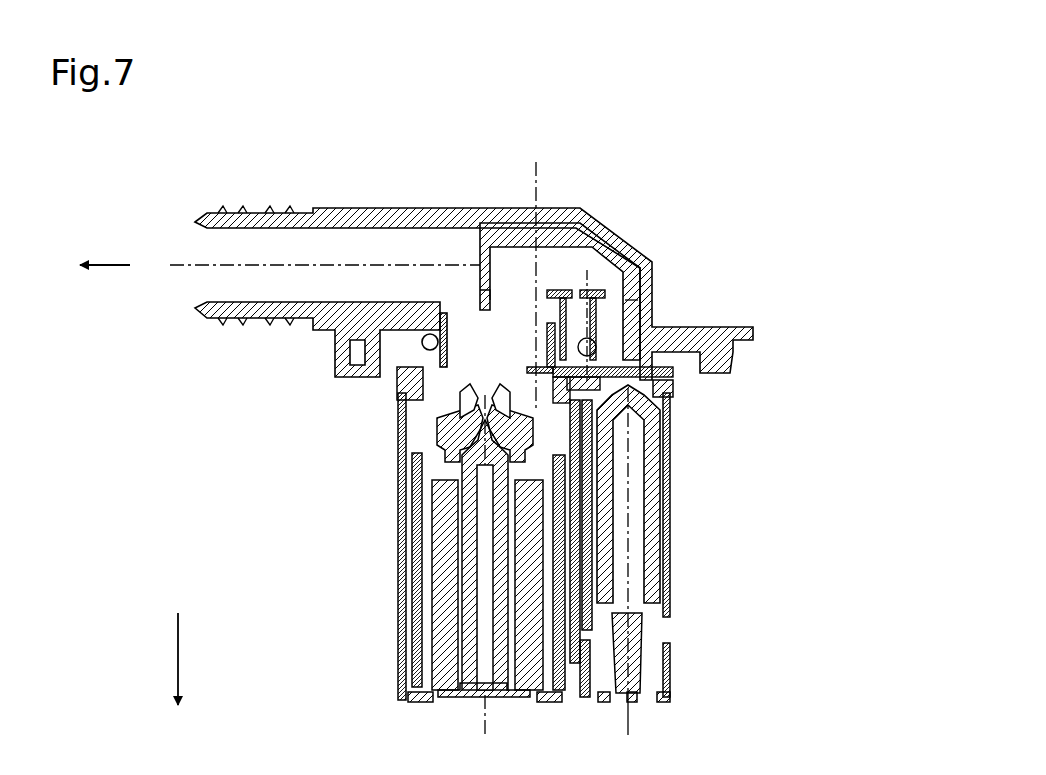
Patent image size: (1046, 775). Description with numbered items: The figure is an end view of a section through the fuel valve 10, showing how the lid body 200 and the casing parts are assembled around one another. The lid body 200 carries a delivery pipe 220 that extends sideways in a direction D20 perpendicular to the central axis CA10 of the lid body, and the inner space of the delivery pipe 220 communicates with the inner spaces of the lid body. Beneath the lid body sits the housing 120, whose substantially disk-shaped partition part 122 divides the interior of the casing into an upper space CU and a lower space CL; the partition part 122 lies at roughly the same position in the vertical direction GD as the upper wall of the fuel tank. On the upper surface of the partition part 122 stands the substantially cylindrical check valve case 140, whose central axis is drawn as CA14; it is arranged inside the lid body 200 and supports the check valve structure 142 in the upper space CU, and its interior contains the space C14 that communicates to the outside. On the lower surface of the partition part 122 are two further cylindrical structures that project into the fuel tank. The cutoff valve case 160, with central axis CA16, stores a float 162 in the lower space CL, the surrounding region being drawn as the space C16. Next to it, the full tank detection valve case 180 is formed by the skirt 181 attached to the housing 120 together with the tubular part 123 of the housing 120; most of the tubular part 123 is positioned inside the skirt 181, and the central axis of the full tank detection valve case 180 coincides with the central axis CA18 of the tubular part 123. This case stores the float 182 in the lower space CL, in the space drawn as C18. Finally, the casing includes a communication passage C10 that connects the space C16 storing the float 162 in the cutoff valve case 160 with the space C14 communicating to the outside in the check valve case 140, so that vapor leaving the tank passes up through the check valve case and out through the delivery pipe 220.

The fuel valve 10 is at (806, 192).
The lid body 200 is at (606, 222).
The delivery pipe 220 is at (213, 314).
The check valve case 140 is at (640, 290).
The check valve structure 142 is at (548, 328).
The partition part 122 is at (548, 300).
The housing 120 is at (668, 378).
The tubular part 123 is at (400, 673).
The full tank detection valve case 180 is at (391, 547).
The skirt 181 is at (417, 572).
The float 182 is at (310, 690).
The cutoff valve case 160 is at (670, 573).
The float 162 is at (650, 542).
The upper space CU is at (508, 262).
The lower space CL is at (482, 387).
The central axis CA10 is at (534, 273).
The central axis of the check valve case CA14 is at (590, 272).
The central axis of the cutoff valve case CA16 is at (625, 574).
The central axis of the tubular part CA18 is at (481, 577).
The communication passage C10 is at (667, 425).
The space communicated to the outside C14 is at (645, 306).
The space storing the float C16 is at (662, 510).
The space storing the float C18 is at (400, 503).
The extending direction of the delivery pipe D20 is at (110, 270).
The vertical direction GD is at (178, 663).